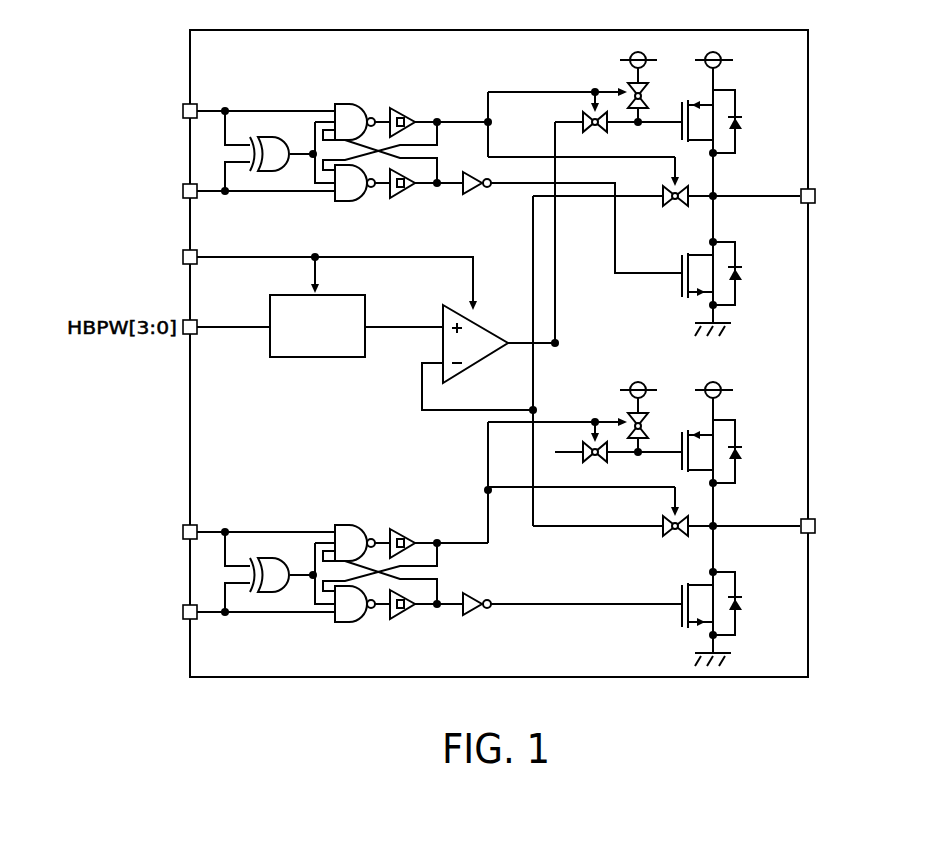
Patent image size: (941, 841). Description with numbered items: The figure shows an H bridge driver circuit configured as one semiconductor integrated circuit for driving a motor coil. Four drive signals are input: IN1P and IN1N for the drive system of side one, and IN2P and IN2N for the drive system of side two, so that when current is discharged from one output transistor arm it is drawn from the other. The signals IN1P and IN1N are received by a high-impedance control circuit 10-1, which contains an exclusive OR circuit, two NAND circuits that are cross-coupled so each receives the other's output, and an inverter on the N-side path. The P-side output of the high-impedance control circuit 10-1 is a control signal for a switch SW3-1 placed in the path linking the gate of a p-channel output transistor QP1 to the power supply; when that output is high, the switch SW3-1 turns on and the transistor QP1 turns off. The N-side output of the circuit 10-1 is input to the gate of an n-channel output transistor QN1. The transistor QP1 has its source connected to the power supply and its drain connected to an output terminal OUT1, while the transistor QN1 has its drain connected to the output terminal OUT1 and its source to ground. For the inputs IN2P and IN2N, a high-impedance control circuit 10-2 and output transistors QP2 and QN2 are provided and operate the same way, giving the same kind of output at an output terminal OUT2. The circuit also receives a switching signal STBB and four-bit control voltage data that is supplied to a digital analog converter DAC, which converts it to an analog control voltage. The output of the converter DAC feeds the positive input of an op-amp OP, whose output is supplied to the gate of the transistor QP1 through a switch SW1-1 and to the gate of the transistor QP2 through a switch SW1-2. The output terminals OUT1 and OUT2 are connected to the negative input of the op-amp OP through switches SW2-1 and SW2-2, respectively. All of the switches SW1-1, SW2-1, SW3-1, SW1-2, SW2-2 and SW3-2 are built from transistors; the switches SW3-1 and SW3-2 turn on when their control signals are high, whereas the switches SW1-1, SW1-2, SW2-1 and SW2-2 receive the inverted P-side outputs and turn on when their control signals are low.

The high-impedance control circuit 10-1 is at (396, 87).
The high-impedance control circuit 10-2 is at (343, 477).
The P-side input signal IN1P is at (177, 112).
The N-side input signal IN1N is at (177, 192).
The P-side input signal IN2P is at (177, 535).
The N-side input signal IN2N is at (177, 613).
The switching signal STBB is at (173, 258).
The digital analog converter DAC is at (317, 326).
The op-amp OP is at (460, 357).
The switch SW1-1 is at (618, 120).
The switch SW2-1 is at (600, 193).
The switch SW3-1 is at (599, 89).
The output transistor QP1 is at (693, 124).
The output transistor QN1 is at (692, 266).
The output terminal OUT1 is at (798, 197).
The switch SW1-2 is at (618, 450).
The switch SW2-2 is at (600, 523).
The switch SW3-2 is at (599, 419).
The output transistor QP2 is at (693, 454).
The output transistor QN2 is at (692, 596).
The output terminal OUT2 is at (798, 527).